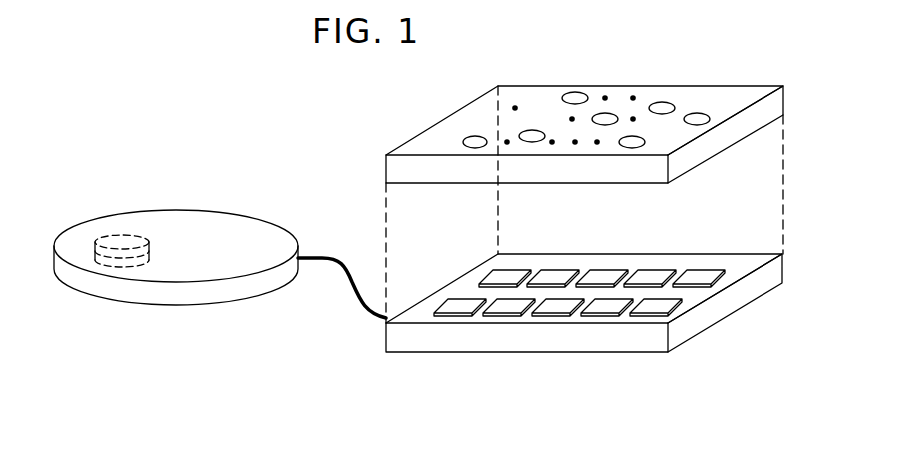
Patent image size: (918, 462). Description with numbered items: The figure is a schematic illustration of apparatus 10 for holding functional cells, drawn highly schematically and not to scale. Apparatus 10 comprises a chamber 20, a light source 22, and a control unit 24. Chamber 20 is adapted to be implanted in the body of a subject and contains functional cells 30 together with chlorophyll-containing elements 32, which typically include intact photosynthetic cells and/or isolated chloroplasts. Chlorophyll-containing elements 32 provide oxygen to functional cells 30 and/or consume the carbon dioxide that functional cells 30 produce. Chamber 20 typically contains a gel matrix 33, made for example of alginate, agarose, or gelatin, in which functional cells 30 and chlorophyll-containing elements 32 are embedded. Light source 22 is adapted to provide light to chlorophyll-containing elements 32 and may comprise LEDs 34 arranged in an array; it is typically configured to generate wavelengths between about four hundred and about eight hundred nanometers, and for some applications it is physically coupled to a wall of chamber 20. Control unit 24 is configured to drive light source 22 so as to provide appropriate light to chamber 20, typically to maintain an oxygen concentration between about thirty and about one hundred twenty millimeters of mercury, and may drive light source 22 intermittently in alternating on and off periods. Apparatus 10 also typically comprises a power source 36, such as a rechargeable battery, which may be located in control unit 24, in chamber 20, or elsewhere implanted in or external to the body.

The apparatus 10 is at (227, 105).
The chamber 20 is at (723, 86).
The light source 22 is at (715, 311).
The control unit 24 is at (226, 212).
The functional cells 30 is at (605, 119).
The chlorophyll-containing elements 32 is at (507, 142).
The gel matrix 33 is at (472, 115).
The LEDs 34 is at (603, 302).
The power source 36 is at (100, 242).